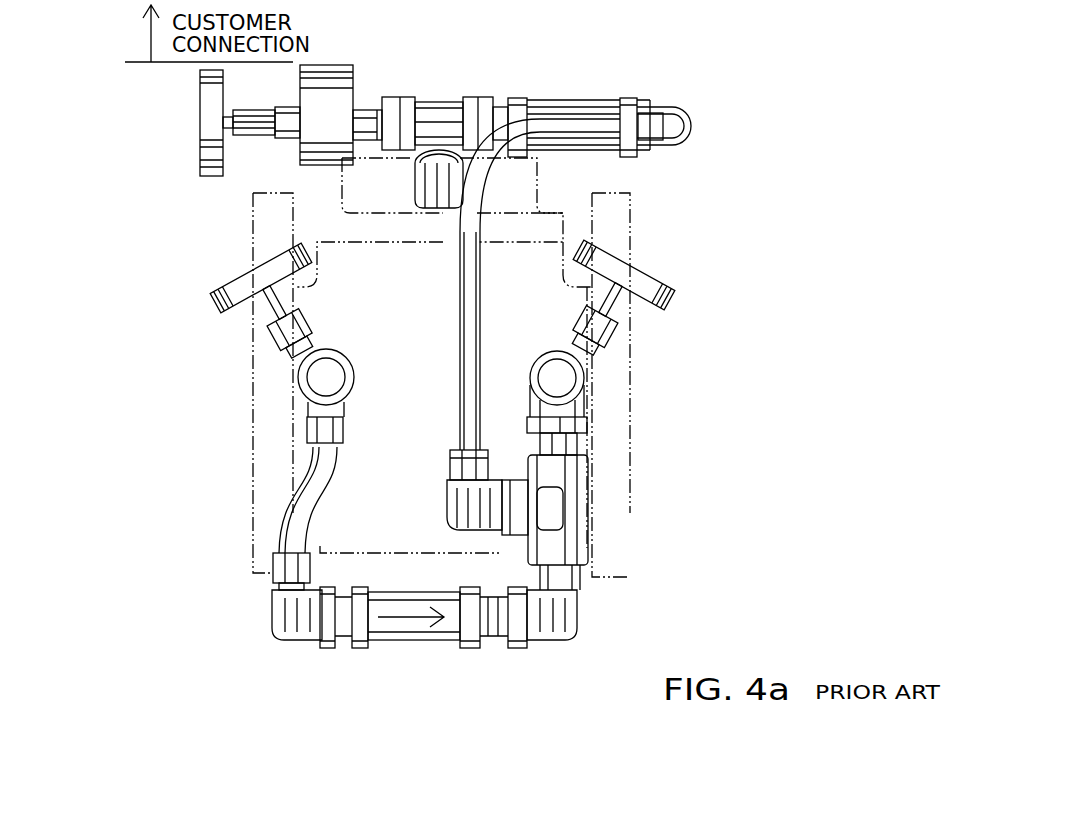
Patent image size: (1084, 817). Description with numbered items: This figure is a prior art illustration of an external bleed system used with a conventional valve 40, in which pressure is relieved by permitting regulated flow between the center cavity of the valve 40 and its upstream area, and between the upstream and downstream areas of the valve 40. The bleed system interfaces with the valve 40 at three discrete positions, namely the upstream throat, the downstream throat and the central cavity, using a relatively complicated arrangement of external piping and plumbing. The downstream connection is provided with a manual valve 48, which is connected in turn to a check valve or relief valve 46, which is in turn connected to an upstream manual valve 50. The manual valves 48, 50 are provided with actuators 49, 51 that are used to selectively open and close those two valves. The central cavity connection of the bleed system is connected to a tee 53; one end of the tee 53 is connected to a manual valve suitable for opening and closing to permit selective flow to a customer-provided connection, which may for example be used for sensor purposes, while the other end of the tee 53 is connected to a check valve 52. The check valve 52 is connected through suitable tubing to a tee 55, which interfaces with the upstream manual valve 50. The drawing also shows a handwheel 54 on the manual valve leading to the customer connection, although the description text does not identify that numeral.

The valve 40 is at (441, 367).
The check valve or relief valve 46 is at (413, 625).
The manual valve 48 is at (317, 392).
The actuator 49 is at (240, 282).
The manual valve 50 is at (572, 393).
The actuator 51 is at (660, 287).
The check valve 52 is at (590, 102).
The tee 53 is at (433, 100).
The handwheel 54 is at (208, 125).
The tee 55 is at (550, 513).